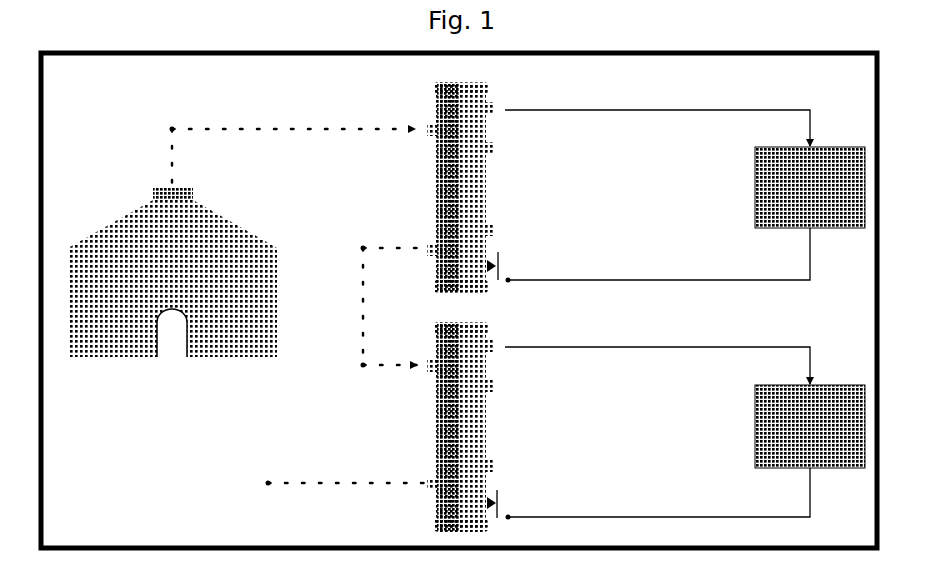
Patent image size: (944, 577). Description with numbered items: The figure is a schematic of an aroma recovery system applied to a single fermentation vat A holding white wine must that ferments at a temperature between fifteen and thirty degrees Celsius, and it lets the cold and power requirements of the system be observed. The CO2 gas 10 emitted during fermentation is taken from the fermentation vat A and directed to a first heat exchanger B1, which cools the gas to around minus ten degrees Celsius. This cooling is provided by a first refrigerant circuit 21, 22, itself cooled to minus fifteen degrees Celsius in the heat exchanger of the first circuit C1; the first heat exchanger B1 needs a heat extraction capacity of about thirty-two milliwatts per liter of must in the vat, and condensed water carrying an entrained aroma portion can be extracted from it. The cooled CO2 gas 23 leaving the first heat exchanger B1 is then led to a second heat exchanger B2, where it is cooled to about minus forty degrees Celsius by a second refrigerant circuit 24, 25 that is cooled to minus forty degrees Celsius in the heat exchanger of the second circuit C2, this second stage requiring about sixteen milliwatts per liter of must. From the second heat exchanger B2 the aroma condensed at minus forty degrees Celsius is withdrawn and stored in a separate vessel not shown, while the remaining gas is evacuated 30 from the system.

The CO2 gas 10 is at (290, 142).
The first refrigerant circuit line 21 is at (657, 112).
The first refrigerant circuit line 22 is at (658, 255).
The cooled CO2 gas 23 is at (376, 307).
The second refrigerant circuit line 24 is at (657, 355).
The second refrigerant circuit line 25 is at (658, 494).
The evacuated gas 30 is at (347, 471).
The fermentation vat A is at (172, 272).
The first heat exchanger B1 is at (462, 187).
The second heat exchanger B2 is at (462, 427).
The heat exchanger of the first circuit C1 is at (810, 187).
The heat exchanger of the second circuit C2 is at (810, 426).